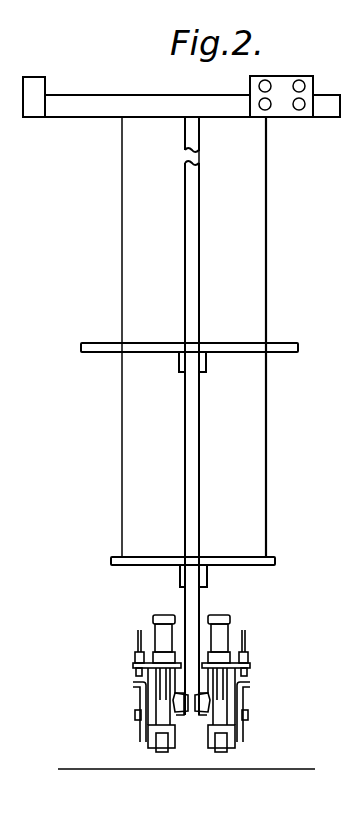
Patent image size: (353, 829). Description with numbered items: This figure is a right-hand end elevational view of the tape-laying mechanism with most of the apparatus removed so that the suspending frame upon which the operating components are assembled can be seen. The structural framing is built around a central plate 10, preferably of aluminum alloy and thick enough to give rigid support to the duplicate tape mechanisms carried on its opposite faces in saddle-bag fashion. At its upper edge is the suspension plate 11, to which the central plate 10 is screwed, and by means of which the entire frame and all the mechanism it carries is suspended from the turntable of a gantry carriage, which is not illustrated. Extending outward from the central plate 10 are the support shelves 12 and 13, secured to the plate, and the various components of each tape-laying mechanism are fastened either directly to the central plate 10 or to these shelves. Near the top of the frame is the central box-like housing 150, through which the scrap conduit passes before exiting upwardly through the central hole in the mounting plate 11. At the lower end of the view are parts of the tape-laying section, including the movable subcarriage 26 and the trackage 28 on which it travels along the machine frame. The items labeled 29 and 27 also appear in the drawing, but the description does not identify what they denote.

The cross head beam 11 is at (112, 100).
The shaft 10 is at (200, 147).
The guide rods 150 is at (135, 184).
The upper guide plate 12 is at (94, 348).
The lower guide plate 13 is at (125, 563).
The gripper assembly 29 is at (126, 675).
The gripper jaws 28 is at (172, 703).
The adjusting nuts 26 is at (135, 717).
The gripper feet 27 is at (156, 750).